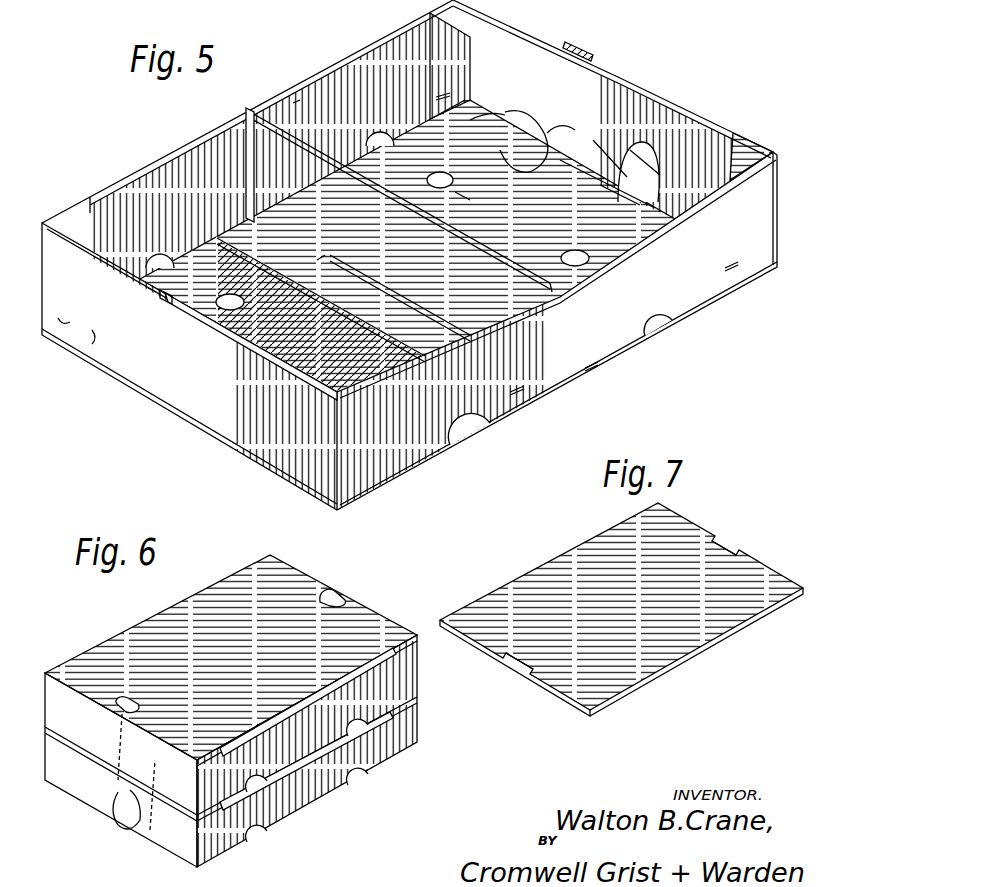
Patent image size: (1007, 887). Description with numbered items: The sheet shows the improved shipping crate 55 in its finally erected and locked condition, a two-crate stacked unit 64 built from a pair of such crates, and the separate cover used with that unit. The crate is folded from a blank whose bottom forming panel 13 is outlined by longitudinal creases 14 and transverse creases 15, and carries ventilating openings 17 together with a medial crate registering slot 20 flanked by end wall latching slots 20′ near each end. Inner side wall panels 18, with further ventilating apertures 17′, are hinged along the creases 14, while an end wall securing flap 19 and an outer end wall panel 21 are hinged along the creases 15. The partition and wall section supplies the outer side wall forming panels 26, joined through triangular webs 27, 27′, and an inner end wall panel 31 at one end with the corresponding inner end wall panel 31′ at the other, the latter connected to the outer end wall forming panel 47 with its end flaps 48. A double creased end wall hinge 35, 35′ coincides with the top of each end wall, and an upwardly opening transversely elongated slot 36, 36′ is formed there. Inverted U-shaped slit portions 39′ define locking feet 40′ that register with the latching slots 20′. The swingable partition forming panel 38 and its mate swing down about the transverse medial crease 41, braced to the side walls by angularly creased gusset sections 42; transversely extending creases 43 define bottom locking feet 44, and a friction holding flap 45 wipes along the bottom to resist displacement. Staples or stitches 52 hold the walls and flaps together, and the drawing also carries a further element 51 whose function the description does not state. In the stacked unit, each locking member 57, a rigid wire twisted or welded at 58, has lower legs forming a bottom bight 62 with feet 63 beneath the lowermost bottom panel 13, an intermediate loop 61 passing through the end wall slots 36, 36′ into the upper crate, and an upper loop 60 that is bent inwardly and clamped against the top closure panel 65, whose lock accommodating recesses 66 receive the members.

In FIG. 5, the bottom forming panel 13 is at (640, 262).
In FIG. 6, the bottom forming panel 13 is at (373, 770).
In FIG. 5, the longitudinal creases 14 is at (197, 253).
In FIG. 5, the transverse creases 15 is at (657, 207).
In FIG. 5, the ventilating openings 17 is at (474, 199).
In FIG. 5, the ventilating apertures 17′ is at (457, 423).
In FIG. 5, the inner side wall panels 18 is at (342, 77).
In FIG. 5, the end wall securing flap 19 is at (637, 173).
In FIG. 5, the crate registering slot 20 is at (613, 192).
In FIG. 6, the crate registering slot 20 is at (123, 820).
In FIG. 5, the end wall latching slots 20′ is at (513, 192).
In FIG. 5, the outer end wall panel 21 is at (183, 417).
In FIG. 6, the outer end wall panel 21 is at (87, 740).
In FIG. 5, the outer side wall forming panels 26 is at (293, 103).
In FIG. 6, the outer side wall forming panels 26 is at (400, 667).
In FIG. 5, the triangular webs 27 is at (70, 217).
In FIG. 5, the triangular webs 27′ is at (758, 135).
In FIG. 5, the inner end wall panel 31 is at (207, 320).
In FIG. 6, the inner end wall panel 31 is at (103, 780).
In FIG. 5, the inner end wall panel 31′ is at (693, 113).
In FIG. 5, the double creased end wall hinge 35 is at (257, 353).
In FIG. 5, the double creased end wall hinge 35′ is at (680, 97).
In FIG. 5, the transversely elongated slot 36 is at (170, 312).
In FIG. 6, the transversely elongated slot 36 is at (117, 700).
In FIG. 5, the transversely elongated slot 36′ is at (623, 72).
In FIG. 5, the partition forming panel 38 is at (393, 197).
In FIG. 5, the inverted U-shaped slit portions 39′ is at (513, 137).
In FIG. 5, the locking feet 40′ is at (547, 133).
In FIG. 5, the transverse medial crease 41 is at (350, 173).
In FIG. 5, the angularly creased gusset sections 42 is at (240, 120).
In FIG. 5, the transversely extending creases 43 is at (367, 283).
In FIG. 5, the bottom locking feet 44 is at (317, 260).
In FIG. 5, the friction holding flap 45 is at (343, 303).
In FIG. 5, the outer end wall forming panel 47 is at (630, 150).
In FIG. 5, the end flaps 48 is at (464, 134).
In FIG. 5, the hook 51 is at (342, 232).
In FIG. 5, the staples or stitches 52 is at (731, 265).
In FIG. 5, the shipping crate 55 is at (592, 31).
In FIG. 6, the shipping crate 55 is at (422, 703).
In FIG. 6, the locking member 57 is at (317, 598).
In FIG. 6, the twisted or welded portion 58 is at (113, 737).
In FIG. 6, the upper crate aligning and stabilizing loop 60 is at (133, 713).
In FIG. 6, the intermediate crate aligning and stabilizing loop 61 is at (140, 733).
In FIG. 6, the lower legs forming bottom bight 62 is at (127, 800).
In FIG. 6, the feet 63 is at (150, 830).
In FIG. 6, the two-crate stacked unit 64 is at (188, 587).
In FIG. 6, the top closure panel 65 is at (267, 573).
In FIG. 7, the top closure panel 65 is at (567, 563).
In FIG. 6, the lock accommodating recesses 66 is at (333, 593).
In FIG. 7, the lock accommodating recesses 66 is at (723, 543).